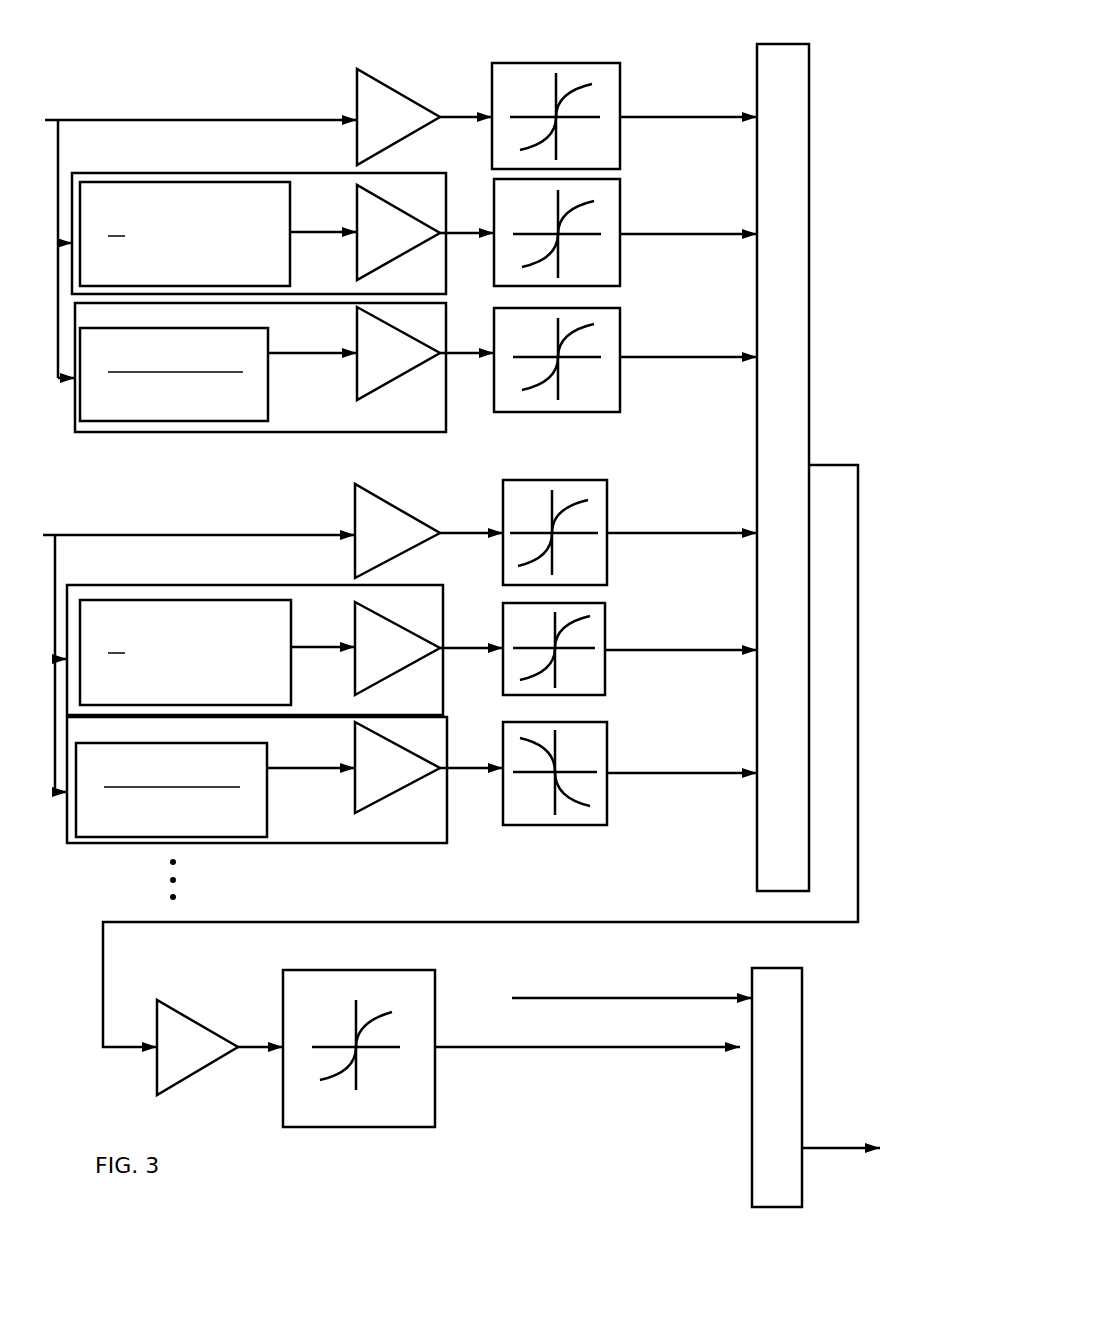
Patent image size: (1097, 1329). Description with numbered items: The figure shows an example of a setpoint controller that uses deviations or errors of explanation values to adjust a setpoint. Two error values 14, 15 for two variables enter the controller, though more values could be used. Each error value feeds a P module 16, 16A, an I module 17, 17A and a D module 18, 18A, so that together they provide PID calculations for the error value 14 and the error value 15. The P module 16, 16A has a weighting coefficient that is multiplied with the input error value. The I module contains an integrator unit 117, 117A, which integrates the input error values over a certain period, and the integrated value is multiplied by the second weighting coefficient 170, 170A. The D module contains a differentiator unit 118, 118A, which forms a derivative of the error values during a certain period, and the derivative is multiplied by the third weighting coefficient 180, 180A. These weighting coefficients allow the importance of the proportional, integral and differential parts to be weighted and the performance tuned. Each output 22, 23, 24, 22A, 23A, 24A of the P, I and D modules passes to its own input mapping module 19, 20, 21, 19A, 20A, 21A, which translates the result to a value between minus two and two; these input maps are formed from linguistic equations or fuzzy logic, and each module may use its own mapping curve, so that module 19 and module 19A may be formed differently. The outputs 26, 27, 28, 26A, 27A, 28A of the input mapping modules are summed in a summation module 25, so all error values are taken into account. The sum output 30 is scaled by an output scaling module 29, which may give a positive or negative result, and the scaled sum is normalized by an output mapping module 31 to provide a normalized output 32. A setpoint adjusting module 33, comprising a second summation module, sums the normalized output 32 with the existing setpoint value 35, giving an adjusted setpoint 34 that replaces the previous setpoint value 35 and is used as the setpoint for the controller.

The error value 14 is at (108, 88).
The error value 15 is at (88, 500).
The P module 16 is at (376, 96).
The P module 16A is at (405, 510).
The I module 17 is at (258, 173).
The I module 17A is at (200, 585).
The D module 18 is at (300, 434).
The D module 18A is at (272, 845).
The input mapping module 19 is at (492, 62).
The input mapping module 19A is at (512, 480).
The input mapping module 20 is at (620, 262).
The input mapping module 20A is at (606, 680).
The input mapping module 21 is at (620, 398).
The input mapping module 21A is at (503, 748).
The output 22 is at (452, 115).
The output 22A is at (448, 531).
The output 23 is at (455, 230).
The output 23A is at (452, 646).
The output 24 is at (456, 350).
The output 24A is at (458, 772).
The summation module 25 is at (810, 388).
The output 26 is at (712, 114).
The output 26A is at (712, 531).
The output 27 is at (712, 232).
The output 27A is at (712, 648).
The output 28 is at (712, 354).
The output 28A is at (712, 771).
The output scaling module 29 is at (180, 1012).
The output of the summation module 30 is at (440, 922).
The output mapping module 31 is at (283, 990).
The normalized output 32 is at (584, 1050).
The setpoint adjusting module 33 is at (803, 1012).
The adjusted setpoint 34 is at (840, 1152).
The setpoint value 35 is at (678, 996).
The integrator unit 117 is at (112, 200).
The integrator unit 117A is at (118, 612).
The differentiator unit 118 is at (213, 410).
The differentiator unit 118A is at (112, 823).
The second weighting coefficient 170 is at (382, 212).
The second weighting coefficient 170A is at (392, 618).
The third weighting coefficient 180 is at (392, 378).
The third weighting coefficient 180A is at (384, 796).